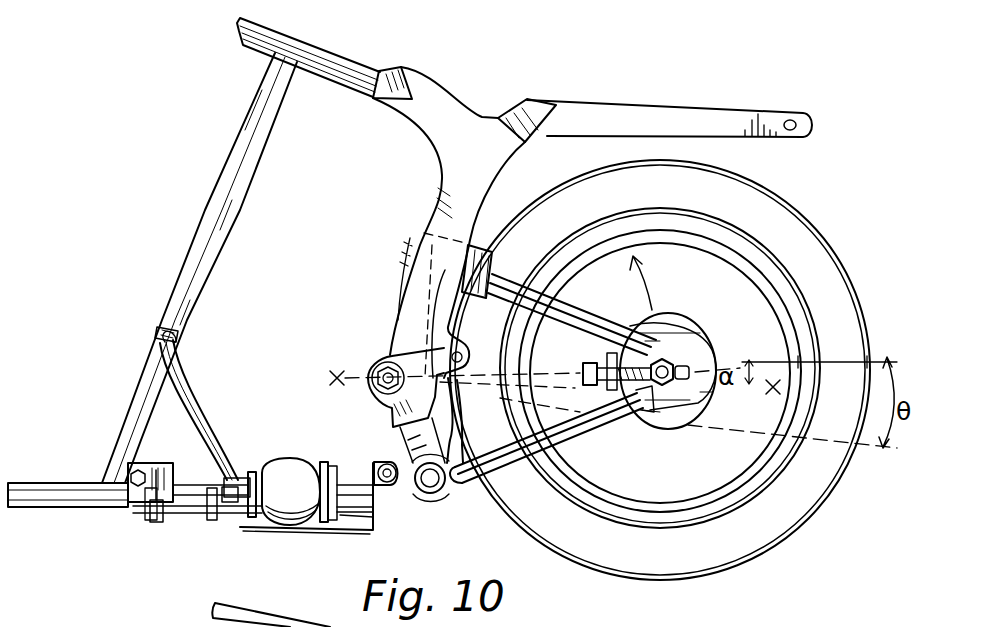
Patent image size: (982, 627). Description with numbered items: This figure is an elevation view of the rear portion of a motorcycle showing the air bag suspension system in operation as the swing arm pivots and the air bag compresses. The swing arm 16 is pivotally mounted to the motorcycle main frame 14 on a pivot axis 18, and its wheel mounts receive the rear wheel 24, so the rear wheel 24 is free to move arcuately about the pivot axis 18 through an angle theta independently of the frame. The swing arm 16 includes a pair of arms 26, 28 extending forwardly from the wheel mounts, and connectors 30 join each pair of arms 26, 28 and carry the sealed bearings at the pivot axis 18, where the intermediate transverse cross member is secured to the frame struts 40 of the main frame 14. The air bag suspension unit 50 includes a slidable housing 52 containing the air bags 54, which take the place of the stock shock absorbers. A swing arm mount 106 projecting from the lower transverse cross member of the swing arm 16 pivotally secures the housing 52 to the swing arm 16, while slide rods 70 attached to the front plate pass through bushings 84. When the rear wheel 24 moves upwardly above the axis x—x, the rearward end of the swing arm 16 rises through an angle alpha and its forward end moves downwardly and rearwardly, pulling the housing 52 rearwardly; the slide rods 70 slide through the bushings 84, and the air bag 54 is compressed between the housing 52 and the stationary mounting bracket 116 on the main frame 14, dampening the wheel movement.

The main frame 14 is at (186, 208).
The swing arm 16 is at (597, 454).
The pivot axis 18 is at (387, 365).
The rear wheel 24 is at (806, 501).
The arm 26 is at (596, 414).
The arm 28 is at (567, 308).
The connector 30 is at (451, 416).
The frame strut 40 is at (414, 223).
The air bag suspension unit 50 is at (263, 556).
The slidable housing 52 is at (297, 540).
The air bag 54 is at (296, 468).
The slide rod 70 is at (136, 512).
The bushing 84 is at (151, 508).
The swing arm mount 106 is at (405, 492).
The mounting bracket 116 is at (381, 460).